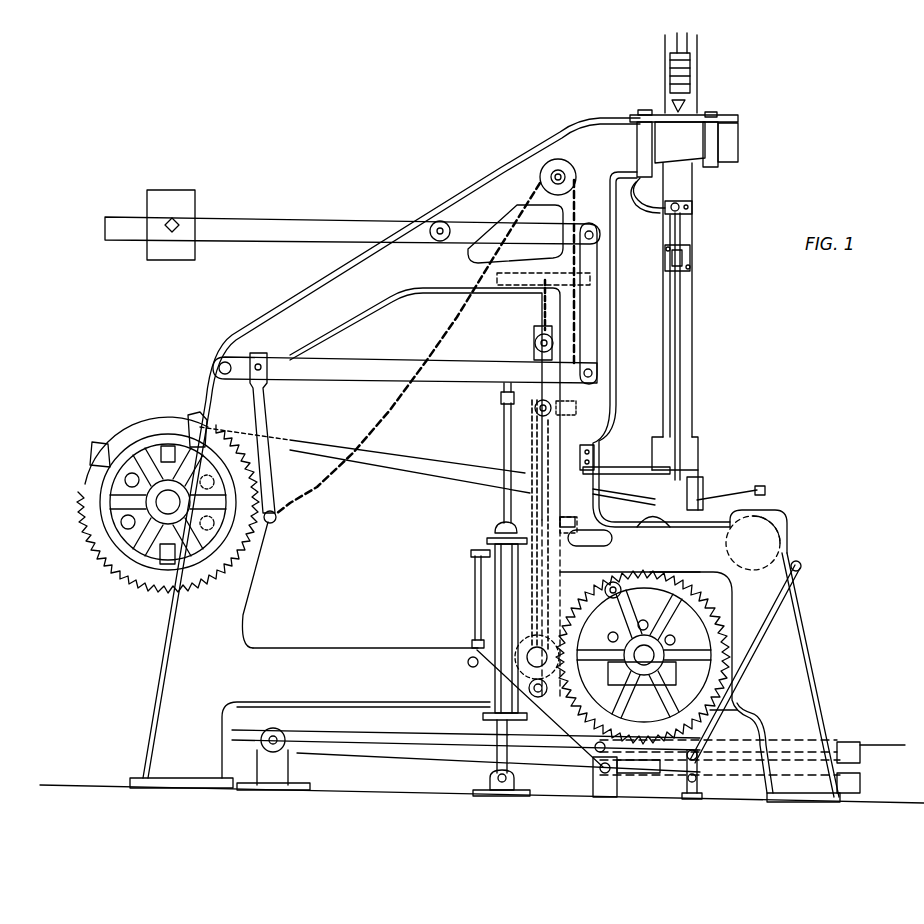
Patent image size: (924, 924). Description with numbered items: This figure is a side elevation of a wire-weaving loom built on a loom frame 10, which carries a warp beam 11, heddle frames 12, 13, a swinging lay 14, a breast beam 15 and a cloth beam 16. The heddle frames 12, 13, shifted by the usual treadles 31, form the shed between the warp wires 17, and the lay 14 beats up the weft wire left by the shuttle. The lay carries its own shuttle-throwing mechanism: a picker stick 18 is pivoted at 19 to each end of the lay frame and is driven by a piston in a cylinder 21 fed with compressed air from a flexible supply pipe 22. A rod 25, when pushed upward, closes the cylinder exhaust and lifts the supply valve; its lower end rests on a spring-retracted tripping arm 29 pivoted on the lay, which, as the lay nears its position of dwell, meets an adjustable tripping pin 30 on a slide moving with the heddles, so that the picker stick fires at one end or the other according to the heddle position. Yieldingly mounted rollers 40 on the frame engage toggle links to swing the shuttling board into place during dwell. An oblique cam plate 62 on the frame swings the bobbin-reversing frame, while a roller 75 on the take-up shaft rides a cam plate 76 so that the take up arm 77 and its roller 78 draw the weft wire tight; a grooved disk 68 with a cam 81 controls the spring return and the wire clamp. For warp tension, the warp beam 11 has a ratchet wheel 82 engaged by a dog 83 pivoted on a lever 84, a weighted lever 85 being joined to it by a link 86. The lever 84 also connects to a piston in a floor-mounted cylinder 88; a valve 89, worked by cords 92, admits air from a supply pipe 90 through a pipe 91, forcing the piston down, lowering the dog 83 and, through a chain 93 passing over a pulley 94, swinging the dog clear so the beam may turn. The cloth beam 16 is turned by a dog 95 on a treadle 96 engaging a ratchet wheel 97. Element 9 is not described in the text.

The rail 9 is at (895, 745).
The loom frame 10 is at (348, 662).
The warp beam 11 is at (135, 432).
The heddle frame 12 is at (504, 440).
The heddle frame 13 is at (553, 548).
The swinging lay 14 is at (693, 318).
The breast beam 15 is at (788, 523).
The cloth beam 16 is at (690, 625).
The warp wires 17 is at (420, 456).
The picker stick 18 is at (681, 384).
The pivotal connection 19 is at (691, 256).
The cylinder 21 is at (693, 207).
The flexible supply pipe 22 is at (648, 210).
The rod 25 is at (668, 425).
The tripping arm 29 is at (640, 497).
The tripping pin 30 is at (581, 455).
The treadles 31 is at (862, 786).
The rollers 40 is at (600, 520).
The cam plate 62 is at (614, 538).
The grooved disk 68 is at (672, 516).
The roller 75 is at (700, 480).
The cam plate 76 is at (640, 467).
The take up arm 77 is at (733, 494).
The roller 78 is at (766, 490).
The cam 81 is at (502, 516).
The ratchet wheel 82 is at (252, 570).
The dog 83 is at (268, 410).
The lever 84 is at (350, 381).
The weighted lever 85 is at (325, 218).
The link 86 is at (599, 312).
The cylinder 88 is at (493, 688).
The valve 89 is at (595, 780).
The supply pipe 90 is at (335, 738).
The pipe 91 is at (474, 614).
The cords 92 is at (742, 710).
The chain 93 is at (408, 408).
The pulley 94 is at (577, 172).
The dog 95 is at (546, 566).
The treadle 96 is at (622, 590).
The ratchet wheel 97 is at (668, 570).